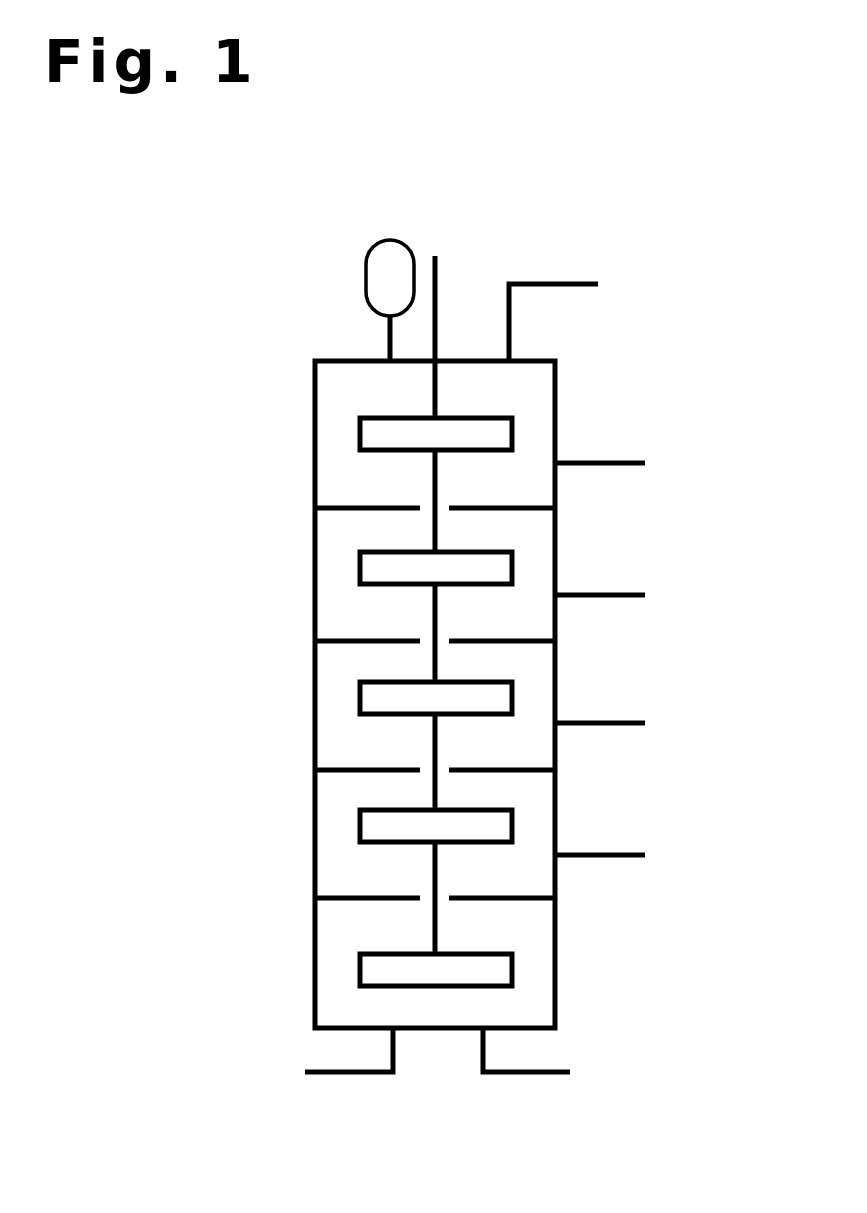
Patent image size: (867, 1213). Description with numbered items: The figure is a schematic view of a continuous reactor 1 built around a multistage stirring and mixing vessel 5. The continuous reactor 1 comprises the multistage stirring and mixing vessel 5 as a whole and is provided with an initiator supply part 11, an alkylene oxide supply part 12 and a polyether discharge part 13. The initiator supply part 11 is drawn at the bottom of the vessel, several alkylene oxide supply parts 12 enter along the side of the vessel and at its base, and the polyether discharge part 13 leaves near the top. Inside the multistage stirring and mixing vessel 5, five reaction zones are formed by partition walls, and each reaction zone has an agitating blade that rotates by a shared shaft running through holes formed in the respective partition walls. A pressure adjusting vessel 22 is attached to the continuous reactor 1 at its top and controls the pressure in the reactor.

The continuous reactor 1 is at (233, 640).
The multistage stirring and mixing vessel 5 is at (316, 812).
The initiator supply part 11 is at (340, 1075).
The alkylene oxide supply part 12 is at (608, 465).
The polyether discharge part 13 is at (583, 287).
The pressure adjusting vessel 22 is at (366, 279).